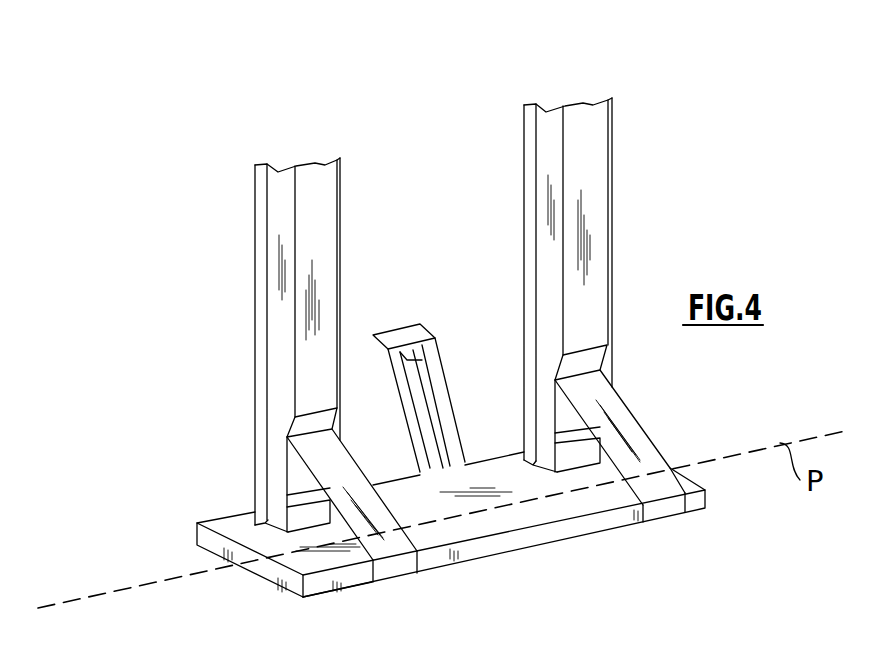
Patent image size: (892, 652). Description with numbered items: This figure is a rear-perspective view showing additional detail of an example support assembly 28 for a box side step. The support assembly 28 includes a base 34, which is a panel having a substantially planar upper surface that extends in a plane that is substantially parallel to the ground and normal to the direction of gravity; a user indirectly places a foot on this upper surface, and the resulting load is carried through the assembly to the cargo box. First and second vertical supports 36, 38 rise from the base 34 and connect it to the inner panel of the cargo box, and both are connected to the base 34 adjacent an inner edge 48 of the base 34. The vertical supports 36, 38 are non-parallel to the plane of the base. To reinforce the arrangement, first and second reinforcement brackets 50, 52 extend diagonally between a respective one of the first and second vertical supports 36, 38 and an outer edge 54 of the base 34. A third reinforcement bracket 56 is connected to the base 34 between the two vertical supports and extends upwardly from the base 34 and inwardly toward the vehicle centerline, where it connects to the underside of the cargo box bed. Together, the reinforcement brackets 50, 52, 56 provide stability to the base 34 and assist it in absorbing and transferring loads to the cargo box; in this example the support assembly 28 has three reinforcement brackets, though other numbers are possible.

The support assembly 28 is at (482, 90).
The base 34 is at (457, 517).
The first vertical support 36 is at (590, 165).
The second vertical support 38 is at (320, 225).
The inner edge 48 is at (230, 512).
The first reinforcement bracket 50 is at (633, 437).
The second reinforcement bracket 52 is at (340, 475).
The outer edge 54 is at (337, 580).
The third reinforcement bracket 56 is at (440, 388).